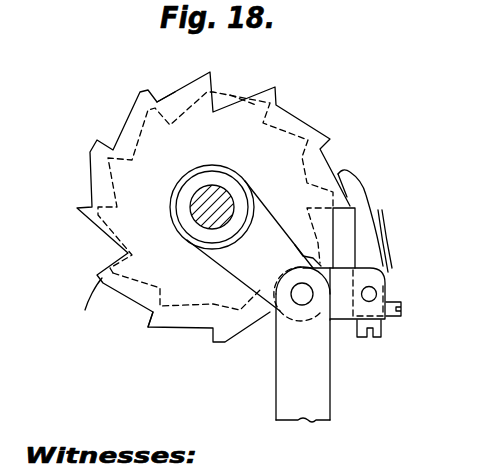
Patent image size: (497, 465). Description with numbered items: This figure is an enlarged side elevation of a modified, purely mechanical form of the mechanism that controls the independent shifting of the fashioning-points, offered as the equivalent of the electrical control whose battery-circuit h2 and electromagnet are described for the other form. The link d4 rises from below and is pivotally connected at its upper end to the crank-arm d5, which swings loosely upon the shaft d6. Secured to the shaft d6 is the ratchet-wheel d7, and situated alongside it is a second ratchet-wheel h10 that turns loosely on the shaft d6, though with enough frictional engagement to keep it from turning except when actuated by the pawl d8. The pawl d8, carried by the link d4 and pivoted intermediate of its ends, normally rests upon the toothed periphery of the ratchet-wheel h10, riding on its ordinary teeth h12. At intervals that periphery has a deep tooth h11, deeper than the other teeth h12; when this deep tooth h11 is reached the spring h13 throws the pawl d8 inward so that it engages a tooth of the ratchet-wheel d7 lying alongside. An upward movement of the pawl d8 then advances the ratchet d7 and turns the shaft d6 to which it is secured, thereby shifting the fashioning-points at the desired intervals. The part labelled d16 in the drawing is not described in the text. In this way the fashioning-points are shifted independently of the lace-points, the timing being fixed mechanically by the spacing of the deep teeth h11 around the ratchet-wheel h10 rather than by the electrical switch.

The ratchet-wheel h10 is at (283, 125).
The deep tooth h11 is at (222, 107).
The teeth h12 is at (163, 92).
The spring h13 is at (395, 262).
The battery-circuit h2 is at (148, 328).
The link d4 is at (310, 383).
The crank-arm d5 is at (253, 273).
The shaft d6 is at (193, 202).
The ratchet-wheel d7 is at (244, 108).
The pawl d8 is at (362, 200).
The clip d16 is at (385, 321).